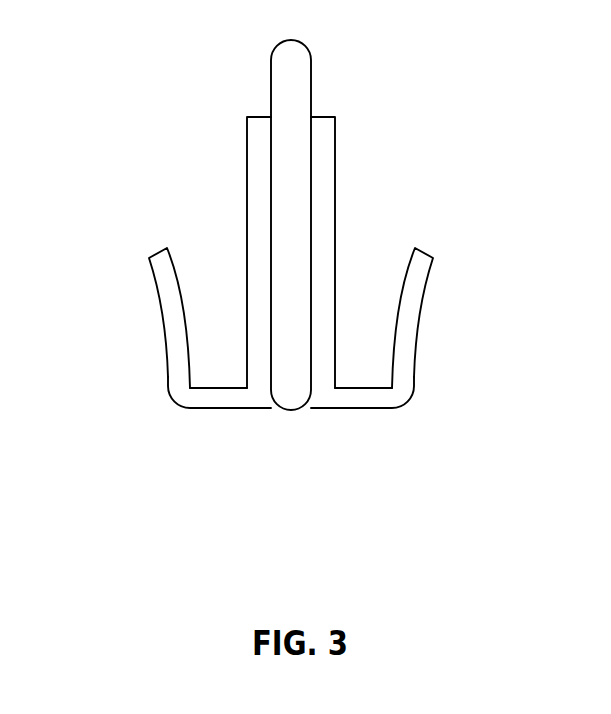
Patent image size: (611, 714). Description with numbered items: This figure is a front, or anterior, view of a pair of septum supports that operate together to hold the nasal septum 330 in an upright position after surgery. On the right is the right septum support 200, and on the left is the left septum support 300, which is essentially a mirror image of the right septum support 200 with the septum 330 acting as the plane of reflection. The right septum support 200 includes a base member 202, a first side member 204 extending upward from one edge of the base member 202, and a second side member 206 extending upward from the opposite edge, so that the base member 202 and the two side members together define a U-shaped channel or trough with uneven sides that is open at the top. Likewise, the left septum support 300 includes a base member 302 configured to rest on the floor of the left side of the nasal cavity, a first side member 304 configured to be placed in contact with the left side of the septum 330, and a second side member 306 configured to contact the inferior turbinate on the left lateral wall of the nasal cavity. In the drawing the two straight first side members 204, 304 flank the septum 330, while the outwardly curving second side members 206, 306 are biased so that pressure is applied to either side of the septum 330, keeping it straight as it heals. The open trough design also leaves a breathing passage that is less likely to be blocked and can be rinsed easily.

The right septum support 200 is at (169, 303).
The base member 202 is at (223, 408).
The first side member 204 is at (247, 155).
The second side member 206 is at (155, 273).
The left septum support 300 is at (412, 297).
The base member 302 is at (353, 408).
The first side member 304 is at (335, 138).
The second side member 306 is at (428, 275).
The septum 330 is at (313, 67).